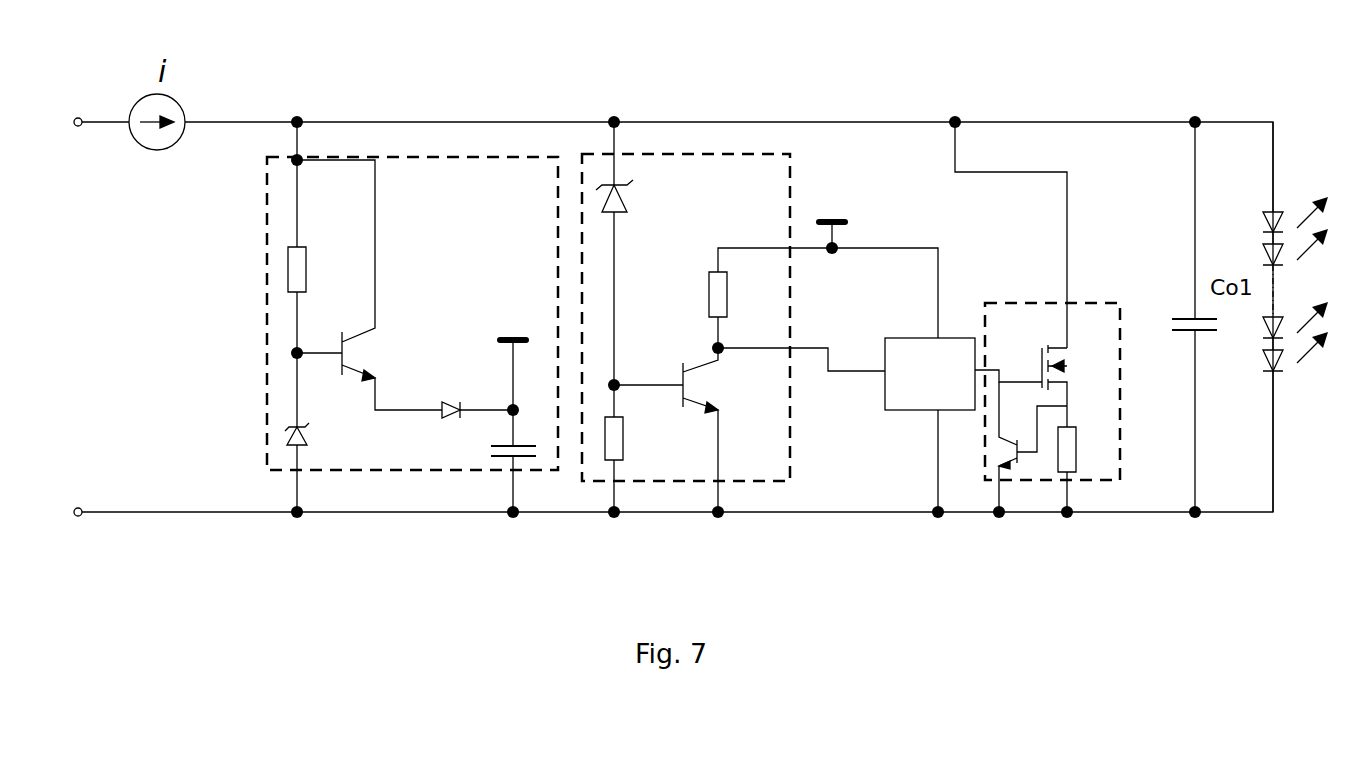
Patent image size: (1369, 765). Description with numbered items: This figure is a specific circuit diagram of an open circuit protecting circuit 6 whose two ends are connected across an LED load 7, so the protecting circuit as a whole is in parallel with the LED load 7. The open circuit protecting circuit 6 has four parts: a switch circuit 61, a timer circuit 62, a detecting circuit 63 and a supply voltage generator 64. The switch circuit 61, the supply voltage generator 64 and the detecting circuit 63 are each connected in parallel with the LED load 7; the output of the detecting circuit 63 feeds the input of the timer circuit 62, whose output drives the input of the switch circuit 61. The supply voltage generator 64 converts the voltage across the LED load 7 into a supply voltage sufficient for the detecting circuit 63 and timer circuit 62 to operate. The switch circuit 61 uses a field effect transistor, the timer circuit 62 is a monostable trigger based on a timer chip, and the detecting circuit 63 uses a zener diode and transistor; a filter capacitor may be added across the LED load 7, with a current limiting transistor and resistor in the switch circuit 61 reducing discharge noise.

The open circuit protecting circuit 6 is at (694, 300).
The LED load 7 is at (1308, 317).
The switch circuit 61 is at (1032, 354).
The timer circuit 62 is at (944, 397).
The detecting circuit 63 is at (740, 216).
The supply voltage generator 64 is at (524, 220).